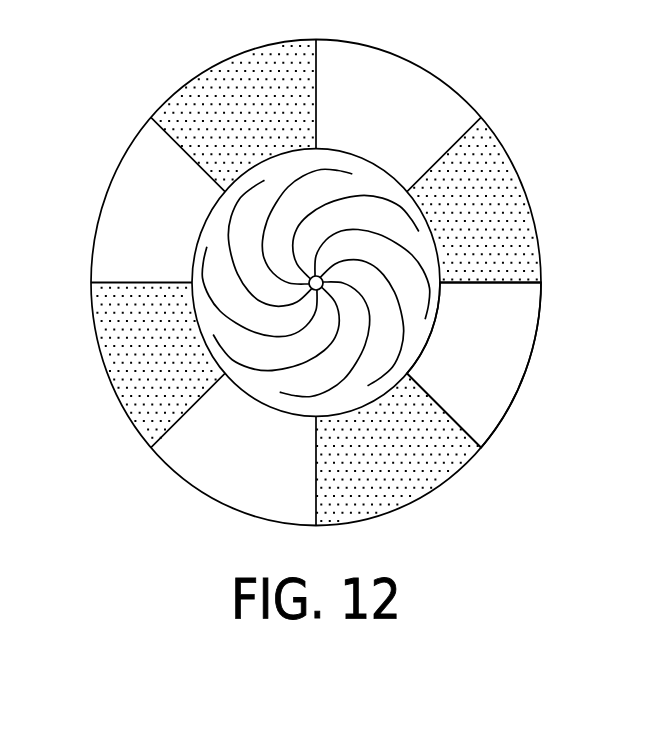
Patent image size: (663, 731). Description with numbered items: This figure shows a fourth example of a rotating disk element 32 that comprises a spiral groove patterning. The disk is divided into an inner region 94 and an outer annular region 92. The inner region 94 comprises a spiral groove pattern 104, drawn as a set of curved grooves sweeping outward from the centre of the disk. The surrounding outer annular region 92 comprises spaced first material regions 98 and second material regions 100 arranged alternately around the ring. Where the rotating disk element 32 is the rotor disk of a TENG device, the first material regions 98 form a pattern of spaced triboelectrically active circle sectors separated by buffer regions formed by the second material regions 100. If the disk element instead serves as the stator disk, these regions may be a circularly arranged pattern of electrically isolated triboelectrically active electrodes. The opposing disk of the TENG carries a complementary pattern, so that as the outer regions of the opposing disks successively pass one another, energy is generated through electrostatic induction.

The rotating disk element 32 is at (88, 83).
The outer annular region 92 is at (432, 112).
The inner region 94 is at (208, 312).
The first material regions 98 is at (510, 205).
The second material regions 100 is at (510, 375).
The spiral groove pattern 104 is at (435, 305).